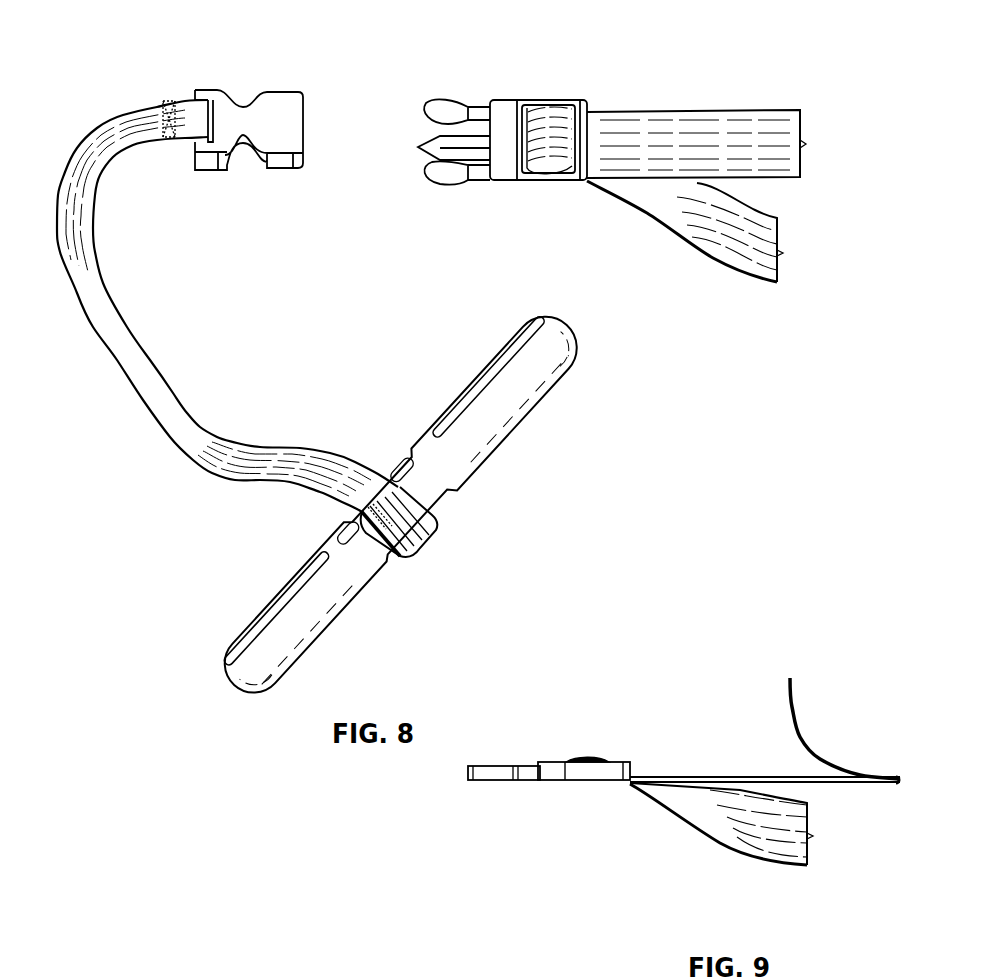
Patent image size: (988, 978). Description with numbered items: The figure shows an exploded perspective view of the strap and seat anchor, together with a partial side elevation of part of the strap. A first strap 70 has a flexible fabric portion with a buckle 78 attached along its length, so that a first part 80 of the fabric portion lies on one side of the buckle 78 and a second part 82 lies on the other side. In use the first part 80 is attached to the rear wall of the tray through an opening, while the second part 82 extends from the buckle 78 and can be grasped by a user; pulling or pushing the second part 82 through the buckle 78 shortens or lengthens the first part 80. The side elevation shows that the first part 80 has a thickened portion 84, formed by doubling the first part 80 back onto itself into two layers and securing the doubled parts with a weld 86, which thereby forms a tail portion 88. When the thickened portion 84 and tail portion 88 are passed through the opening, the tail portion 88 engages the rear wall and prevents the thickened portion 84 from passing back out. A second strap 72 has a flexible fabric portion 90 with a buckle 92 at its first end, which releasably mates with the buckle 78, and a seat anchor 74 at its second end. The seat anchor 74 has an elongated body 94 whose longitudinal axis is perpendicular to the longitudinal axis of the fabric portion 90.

In FIG. 9, the first strap 70 is at (803, 47).
In FIG. 8, the second strap 72 is at (98, 108).
In FIG. 8, the seat anchor 74 is at (533, 413).
In FIG. 9, the buckle 78 is at (498, 112).
In FIG. 9, the first part of the fabric portion 80 is at (652, 127).
In FIG. 9, the second part of the fabric portion 82 is at (655, 197).
In FIG. 9, the thickened portion 84 is at (872, 775).
In FIG. 9, the weld 86 is at (872, 782).
In FIG. 9, the tail portion 88 is at (795, 702).
In FIG. 8, the fabric portion 90 is at (102, 297).
In FIG. 8, the buckle 92 is at (287, 112).
In FIG. 8, the elongated body 94 is at (507, 400).